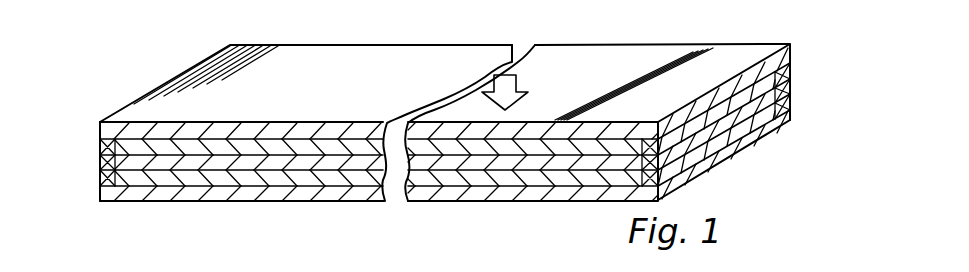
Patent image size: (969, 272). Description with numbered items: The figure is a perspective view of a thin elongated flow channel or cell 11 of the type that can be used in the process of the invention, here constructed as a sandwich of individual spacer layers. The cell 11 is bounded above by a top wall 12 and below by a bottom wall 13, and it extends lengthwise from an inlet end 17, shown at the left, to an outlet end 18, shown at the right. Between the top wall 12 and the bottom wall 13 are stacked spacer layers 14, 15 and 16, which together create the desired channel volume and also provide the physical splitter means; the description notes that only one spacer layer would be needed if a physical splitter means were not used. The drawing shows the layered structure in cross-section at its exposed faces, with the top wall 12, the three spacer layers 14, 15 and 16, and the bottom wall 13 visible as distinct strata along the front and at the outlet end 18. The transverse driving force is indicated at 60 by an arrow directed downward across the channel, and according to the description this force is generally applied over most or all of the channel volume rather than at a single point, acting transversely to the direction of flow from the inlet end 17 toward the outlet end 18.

The thin elongated channel or cell 11 is at (316, 45).
The top wall 12 is at (311, 122).
The bottom wall 13 is at (293, 199).
The spacer layer 14 is at (100, 142).
The spacer layer 15 is at (100, 160).
The spacer layer 16 is at (100, 175).
The inlet end 17 is at (181, 76).
The outlet end 18 is at (792, 68).
The transverse driving force 60 is at (530, 75).